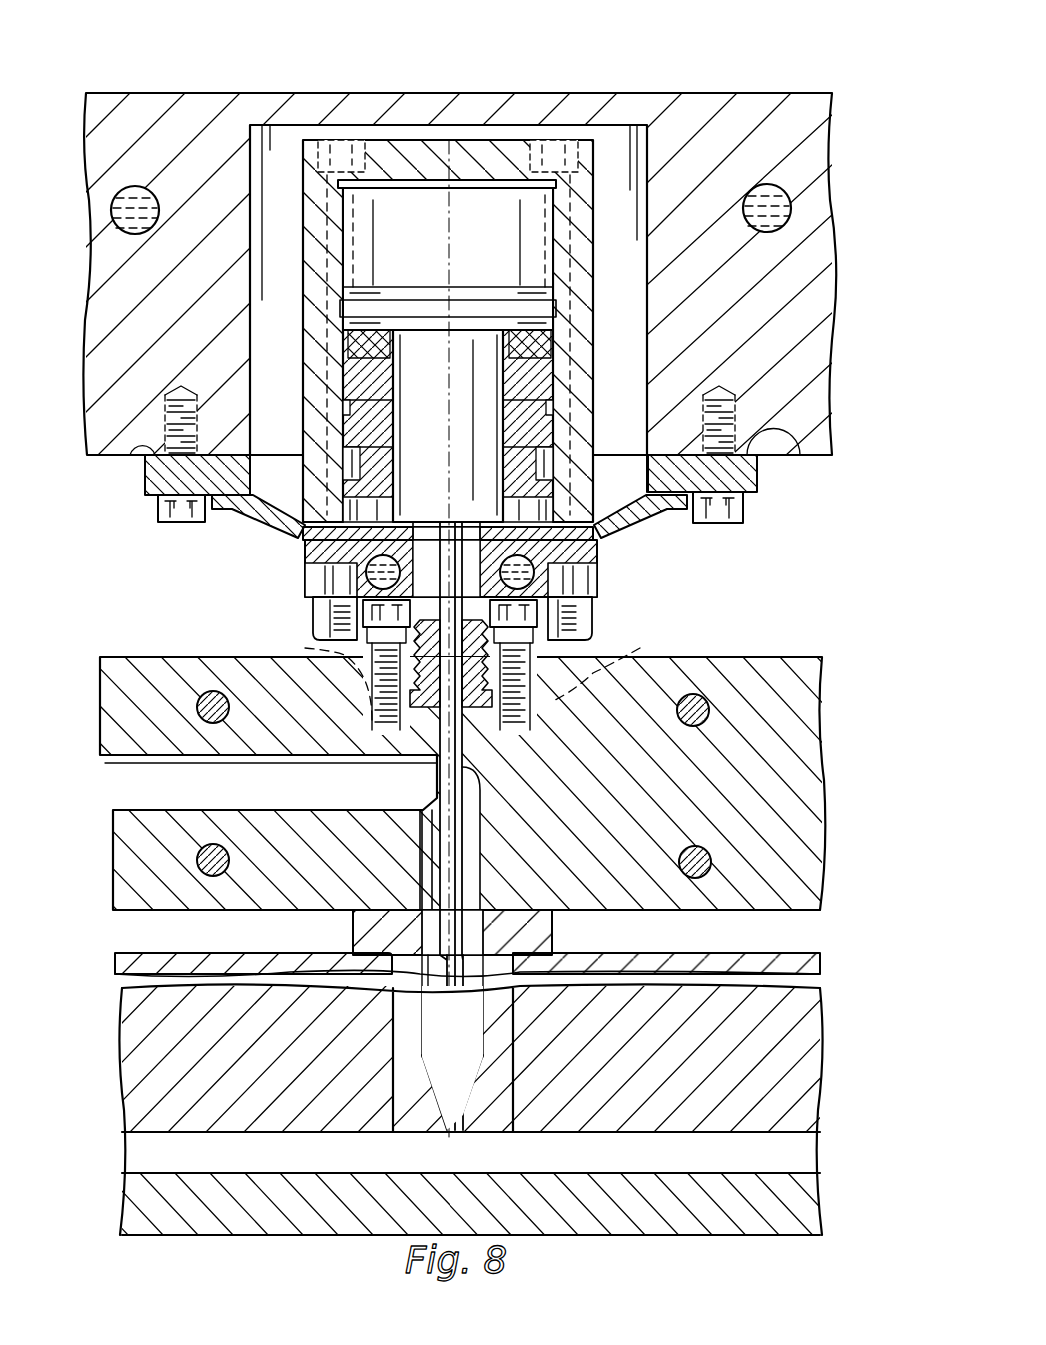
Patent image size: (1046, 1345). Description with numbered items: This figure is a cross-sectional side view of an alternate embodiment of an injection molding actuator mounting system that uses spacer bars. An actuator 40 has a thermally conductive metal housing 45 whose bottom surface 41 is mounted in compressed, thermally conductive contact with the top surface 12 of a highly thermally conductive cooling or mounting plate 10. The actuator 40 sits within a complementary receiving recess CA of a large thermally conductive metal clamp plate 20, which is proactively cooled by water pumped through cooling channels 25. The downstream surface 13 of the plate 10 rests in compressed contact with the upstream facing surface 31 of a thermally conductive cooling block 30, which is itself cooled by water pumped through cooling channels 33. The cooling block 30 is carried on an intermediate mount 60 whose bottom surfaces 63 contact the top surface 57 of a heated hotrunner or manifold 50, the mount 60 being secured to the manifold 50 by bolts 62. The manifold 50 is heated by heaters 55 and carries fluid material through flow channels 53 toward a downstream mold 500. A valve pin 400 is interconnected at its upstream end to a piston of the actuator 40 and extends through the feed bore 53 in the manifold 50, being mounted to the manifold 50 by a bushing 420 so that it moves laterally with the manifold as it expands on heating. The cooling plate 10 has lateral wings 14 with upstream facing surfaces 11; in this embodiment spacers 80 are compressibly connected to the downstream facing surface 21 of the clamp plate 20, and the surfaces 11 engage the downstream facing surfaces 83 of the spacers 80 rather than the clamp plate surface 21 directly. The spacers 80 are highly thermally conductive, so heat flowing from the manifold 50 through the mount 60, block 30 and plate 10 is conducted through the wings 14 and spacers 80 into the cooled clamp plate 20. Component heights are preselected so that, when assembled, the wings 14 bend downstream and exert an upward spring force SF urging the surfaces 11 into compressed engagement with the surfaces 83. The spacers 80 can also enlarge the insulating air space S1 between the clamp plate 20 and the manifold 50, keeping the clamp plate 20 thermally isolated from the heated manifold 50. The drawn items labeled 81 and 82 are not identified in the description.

The clamp plate 20 is at (713, 90).
The cooling channels 25 is at (137, 186).
The receiving recess CA is at (287, 150).
The spacer 80 is at (155, 501).
The flange 81 is at (143, 481).
The downstream facing surface of the clamp plate 21 is at (128, 457).
The housing 45 is at (600, 150).
The actuator 40 is at (497, 130).
The downstream surface of the cooling plate 13 is at (306, 553).
The cooling plate 10 is at (276, 560).
The bottom surface of the actuator housing 41 is at (265, 530).
The top surface of the cooling plate 12 is at (312, 487).
The spring force SF is at (228, 516).
The downstream facing surface of the spacer 83 is at (213, 520).
The bolt head 82 is at (158, 520).
The upstream facing surface of the wings 11 is at (236, 457).
The wings 14 is at (303, 525).
The cooling block 30 is at (603, 558).
The upstream facing surface of the cooling block 31 is at (606, 540).
The cooling channels 33 is at (360, 576).
The mount 60 is at (594, 620).
The manifold 50 is at (130, 656).
The flow channels 53 is at (278, 797).
The top surface of the manifold 57 is at (794, 657).
The heaters 55 is at (205, 845).
The bolts 62 is at (472, 667).
The bottom surfaces of the mount 63 is at (377, 718).
The bushing 420 is at (430, 704).
The valve pin 400 is at (465, 930).
The mold 500 is at (720, 1230).
The insulating air space S1 is at (850, 456).